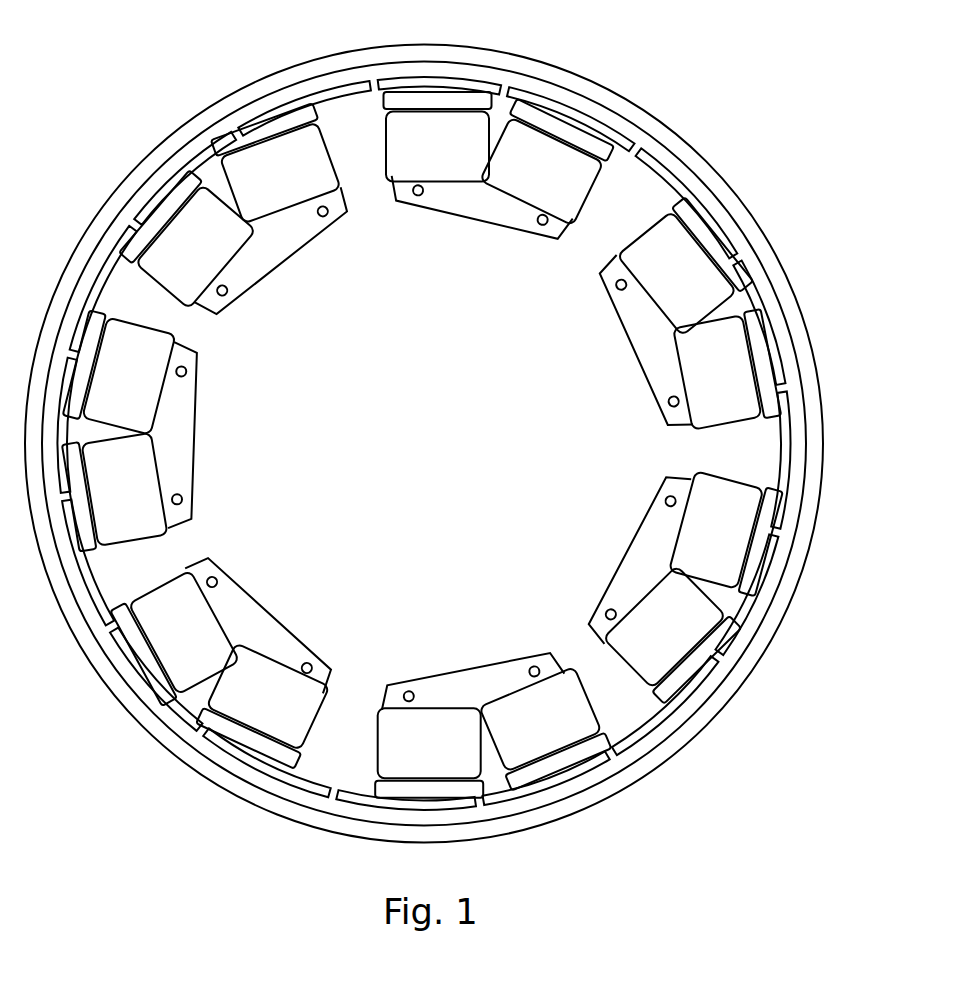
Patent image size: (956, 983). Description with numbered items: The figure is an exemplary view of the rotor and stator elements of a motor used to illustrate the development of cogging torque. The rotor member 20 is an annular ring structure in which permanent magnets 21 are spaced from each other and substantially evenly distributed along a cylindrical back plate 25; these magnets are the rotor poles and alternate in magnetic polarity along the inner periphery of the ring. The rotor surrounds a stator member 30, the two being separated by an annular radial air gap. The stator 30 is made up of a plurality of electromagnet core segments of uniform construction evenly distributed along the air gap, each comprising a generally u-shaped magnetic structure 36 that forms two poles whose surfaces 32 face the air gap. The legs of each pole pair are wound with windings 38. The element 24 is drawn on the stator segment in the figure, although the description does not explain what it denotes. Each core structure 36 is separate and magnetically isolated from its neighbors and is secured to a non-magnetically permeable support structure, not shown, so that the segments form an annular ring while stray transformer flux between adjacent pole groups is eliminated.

The rotor member 20 is at (435, 442).
The permanent magnets 21 is at (678, 142).
The mounting plate 24 is at (479, 240).
The cylindrical back plate 25 is at (605, 90).
The stator member 30 is at (253, 397).
The pole surfaces 32 is at (417, 100).
The u-shaped magnetic structure 36 is at (430, 200).
The windings 38 is at (452, 125).